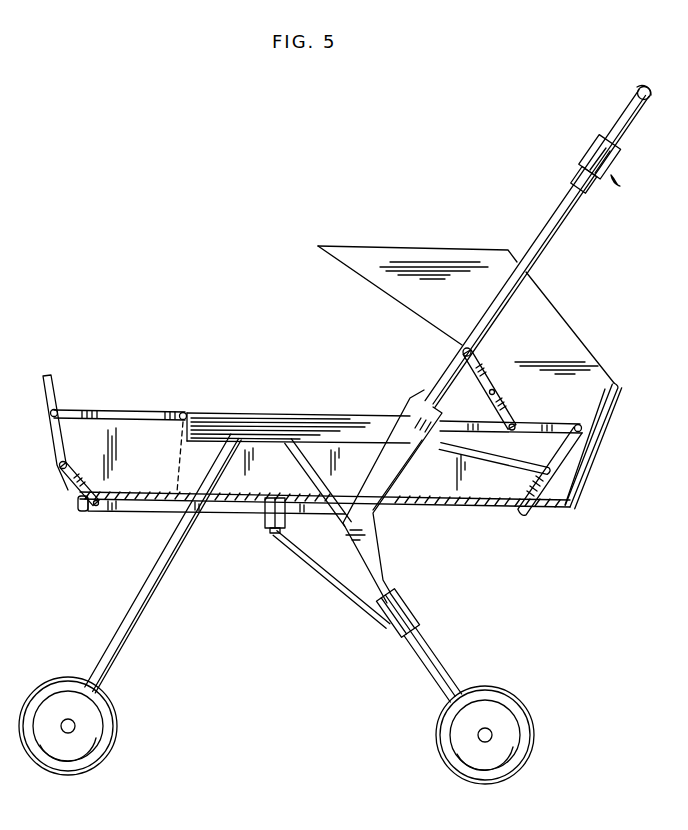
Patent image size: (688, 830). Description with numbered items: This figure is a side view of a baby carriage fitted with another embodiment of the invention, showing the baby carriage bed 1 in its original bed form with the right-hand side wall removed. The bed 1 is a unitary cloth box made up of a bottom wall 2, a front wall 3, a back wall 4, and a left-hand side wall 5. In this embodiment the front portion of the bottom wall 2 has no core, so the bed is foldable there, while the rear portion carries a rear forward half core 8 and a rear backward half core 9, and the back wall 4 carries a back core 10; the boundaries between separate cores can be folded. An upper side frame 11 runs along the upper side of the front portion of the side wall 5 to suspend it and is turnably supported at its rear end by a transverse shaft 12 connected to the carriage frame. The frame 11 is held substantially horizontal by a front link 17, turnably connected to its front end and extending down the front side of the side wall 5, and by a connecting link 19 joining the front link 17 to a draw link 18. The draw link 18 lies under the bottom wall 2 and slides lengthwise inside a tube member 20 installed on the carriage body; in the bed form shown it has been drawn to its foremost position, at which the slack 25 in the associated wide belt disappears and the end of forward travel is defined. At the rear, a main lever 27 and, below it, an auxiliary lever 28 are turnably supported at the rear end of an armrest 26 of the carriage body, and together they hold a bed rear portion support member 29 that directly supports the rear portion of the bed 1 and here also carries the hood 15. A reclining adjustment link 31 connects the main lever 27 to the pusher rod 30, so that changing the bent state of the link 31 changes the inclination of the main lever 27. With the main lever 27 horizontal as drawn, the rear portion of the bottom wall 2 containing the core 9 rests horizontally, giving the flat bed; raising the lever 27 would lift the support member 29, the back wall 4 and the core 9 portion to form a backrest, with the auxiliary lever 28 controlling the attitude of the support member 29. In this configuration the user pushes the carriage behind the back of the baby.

The baby carriage bed 1 is at (424, 519).
The bottom wall 2 is at (392, 511).
The front wall 3 is at (60, 436).
The back wall 4 is at (578, 473).
The left-hand side wall 5 is at (143, 428).
The rear forward half core 8 is at (238, 494).
The rear backward half core 9 is at (472, 507).
The back core 10 is at (588, 447).
The upper side frame 11 is at (98, 409).
The transverse shaft 12 is at (184, 411).
The hood 15 is at (440, 251).
The front link 17 is at (59, 459).
The draw link 18 is at (137, 504).
The connecting link 19 is at (80, 493).
The tube member 20 is at (208, 513).
The slack 25 is at (147, 497).
The armrest 26 is at (330, 413).
The main lever 27 is at (465, 422).
The auxiliary lever 28 is at (517, 470).
The bed rear portion support member 29 is at (606, 409).
The pusher rod 30 is at (550, 237).
The reclining adjustment link 31 is at (500, 356).